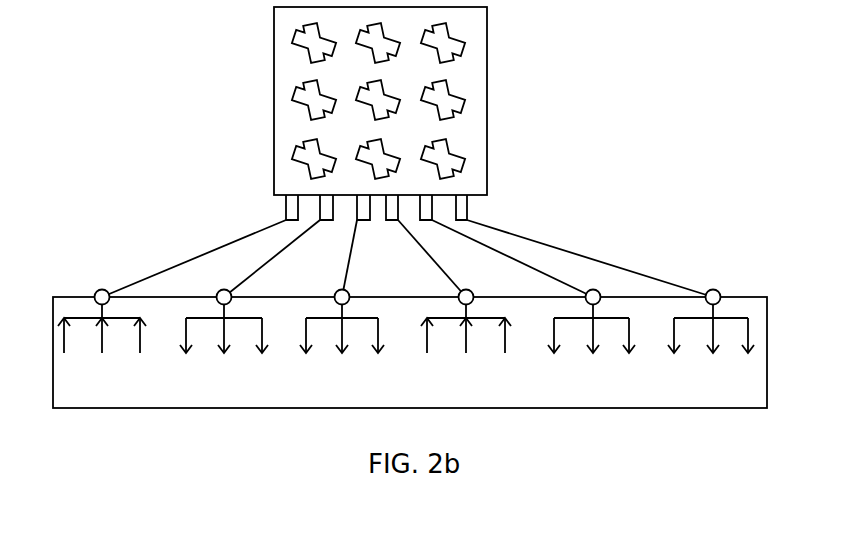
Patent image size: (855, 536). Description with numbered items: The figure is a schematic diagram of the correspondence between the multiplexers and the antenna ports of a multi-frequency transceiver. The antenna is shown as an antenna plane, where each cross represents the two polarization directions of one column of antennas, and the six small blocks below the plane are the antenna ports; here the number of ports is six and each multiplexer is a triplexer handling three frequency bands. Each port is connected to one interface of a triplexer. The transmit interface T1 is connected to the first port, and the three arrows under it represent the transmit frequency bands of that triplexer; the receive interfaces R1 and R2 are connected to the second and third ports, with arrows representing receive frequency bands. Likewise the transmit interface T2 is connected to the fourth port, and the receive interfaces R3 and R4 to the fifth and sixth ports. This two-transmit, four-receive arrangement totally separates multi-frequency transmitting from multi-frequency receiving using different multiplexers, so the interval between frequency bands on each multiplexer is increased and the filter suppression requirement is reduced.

The transmit interface of a triplexer T1 is at (172, 286).
The receive interface of a triplexer R1 is at (250, 286).
The receive interface of a triplexer R2 is at (342, 286).
The transmit interface of a triplexer T2 is at (454, 286).
The receive interface of a triplexer R3 is at (533, 286).
The receive interface of a triplexer R4 is at (612, 286).